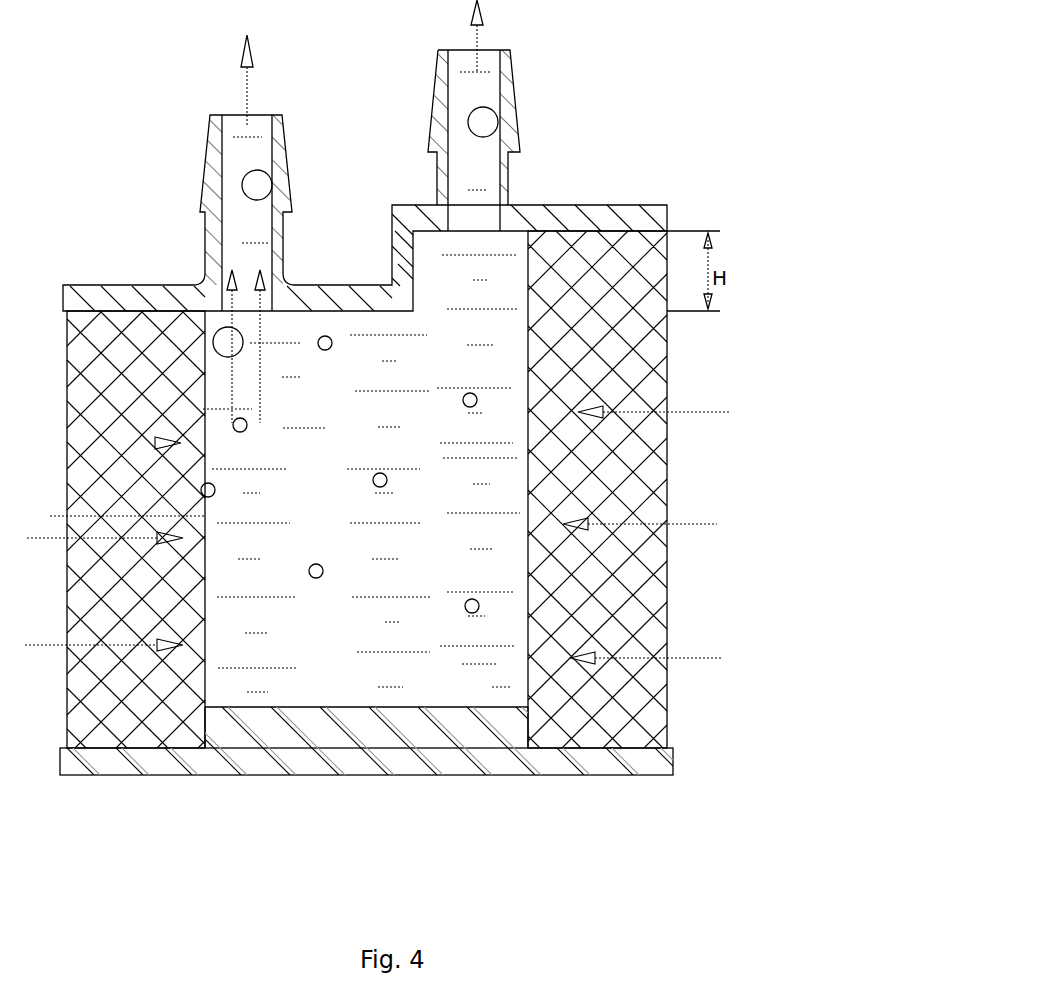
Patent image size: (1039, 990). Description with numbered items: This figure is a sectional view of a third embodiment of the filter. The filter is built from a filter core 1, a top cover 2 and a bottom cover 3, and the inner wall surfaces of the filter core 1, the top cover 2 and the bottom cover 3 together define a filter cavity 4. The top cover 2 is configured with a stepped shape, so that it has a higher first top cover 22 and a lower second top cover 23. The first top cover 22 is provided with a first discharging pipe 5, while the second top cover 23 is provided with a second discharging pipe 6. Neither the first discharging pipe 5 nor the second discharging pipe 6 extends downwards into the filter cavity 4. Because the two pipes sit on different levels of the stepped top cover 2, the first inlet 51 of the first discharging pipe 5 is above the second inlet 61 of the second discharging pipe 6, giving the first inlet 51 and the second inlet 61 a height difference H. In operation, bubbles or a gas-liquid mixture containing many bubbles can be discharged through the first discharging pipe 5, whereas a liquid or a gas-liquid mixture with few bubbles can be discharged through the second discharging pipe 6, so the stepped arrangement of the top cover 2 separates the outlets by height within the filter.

The filter core 1 is at (143, 692).
The top cover 2 is at (365, 212).
The first top cover 22 is at (570, 222).
The second top cover 23 is at (100, 302).
The bottom cover 3 is at (407, 738).
The filter cavity 4 is at (298, 682).
The first discharging pipe 5 is at (508, 90).
The first inlet 51 is at (478, 228).
The second discharging pipe 6 is at (282, 138).
The second inlet 61 is at (270, 290).